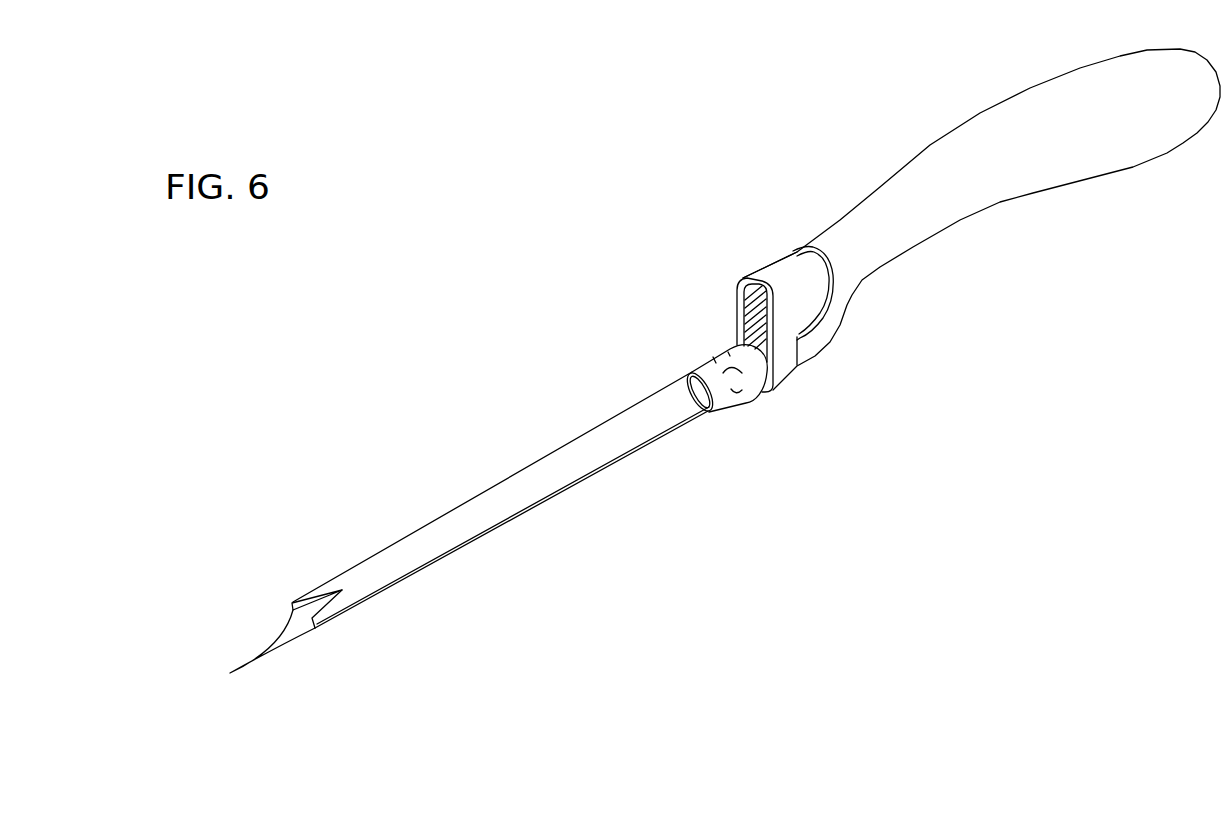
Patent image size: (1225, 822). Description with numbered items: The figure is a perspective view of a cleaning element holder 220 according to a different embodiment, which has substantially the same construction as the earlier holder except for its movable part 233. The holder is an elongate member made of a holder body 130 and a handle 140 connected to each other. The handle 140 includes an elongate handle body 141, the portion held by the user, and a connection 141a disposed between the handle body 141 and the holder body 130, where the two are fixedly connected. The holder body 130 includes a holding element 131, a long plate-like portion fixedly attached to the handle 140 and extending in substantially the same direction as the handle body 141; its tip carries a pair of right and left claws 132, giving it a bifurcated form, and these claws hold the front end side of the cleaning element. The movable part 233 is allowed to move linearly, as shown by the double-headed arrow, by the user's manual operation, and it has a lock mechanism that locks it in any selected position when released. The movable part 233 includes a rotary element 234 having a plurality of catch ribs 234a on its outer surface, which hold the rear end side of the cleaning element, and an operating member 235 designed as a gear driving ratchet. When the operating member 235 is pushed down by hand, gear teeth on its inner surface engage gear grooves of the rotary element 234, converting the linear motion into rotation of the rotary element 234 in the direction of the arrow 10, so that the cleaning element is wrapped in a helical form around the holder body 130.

The arrow 10 is at (708, 353).
The holder body 130 is at (523, 411).
The holding element 131 is at (422, 542).
The claws 132 is at (269, 653).
The handle 140 is at (882, 135).
The handle body 141 is at (977, 173).
The connection 141a is at (845, 305).
The cleaning element holder 220 is at (874, 451).
The movable part 233 is at (718, 271).
The rotary element 234 is at (737, 392).
The catch ribs 234a is at (738, 385).
The operating member 235 is at (788, 305).